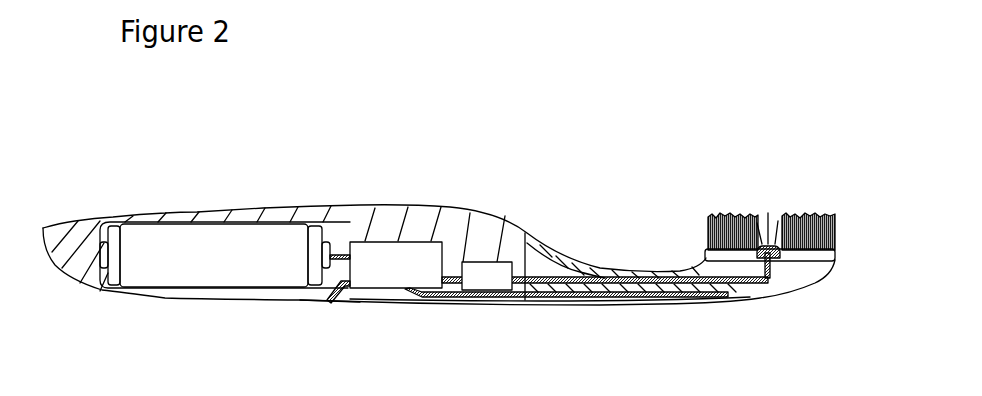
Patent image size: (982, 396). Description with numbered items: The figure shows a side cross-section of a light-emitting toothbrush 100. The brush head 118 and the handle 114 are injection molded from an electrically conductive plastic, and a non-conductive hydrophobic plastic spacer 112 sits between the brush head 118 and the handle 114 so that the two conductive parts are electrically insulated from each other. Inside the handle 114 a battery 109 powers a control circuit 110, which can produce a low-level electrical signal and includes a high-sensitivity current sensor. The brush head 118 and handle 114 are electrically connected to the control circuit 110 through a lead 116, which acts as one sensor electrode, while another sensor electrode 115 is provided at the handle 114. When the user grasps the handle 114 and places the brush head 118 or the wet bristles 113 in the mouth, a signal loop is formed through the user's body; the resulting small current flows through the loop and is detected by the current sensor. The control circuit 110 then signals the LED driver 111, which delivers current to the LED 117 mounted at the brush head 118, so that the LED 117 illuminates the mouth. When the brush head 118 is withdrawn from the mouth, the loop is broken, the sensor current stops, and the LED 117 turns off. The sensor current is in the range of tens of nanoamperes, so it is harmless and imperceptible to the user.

The light-emitting toothbrush 100 is at (263, 183).
The battery 109 is at (142, 277).
The control circuit 110 is at (415, 240).
The LED driver 111 is at (483, 260).
The non-conductive hydrophobic plastic spacer 112 is at (580, 262).
The bristles 113 is at (805, 212).
The handle 114 is at (240, 295).
The sensor electrode 115 is at (327, 300).
The lead 116 is at (657, 295).
The LED 117 is at (775, 257).
The brush head 118 is at (750, 292).